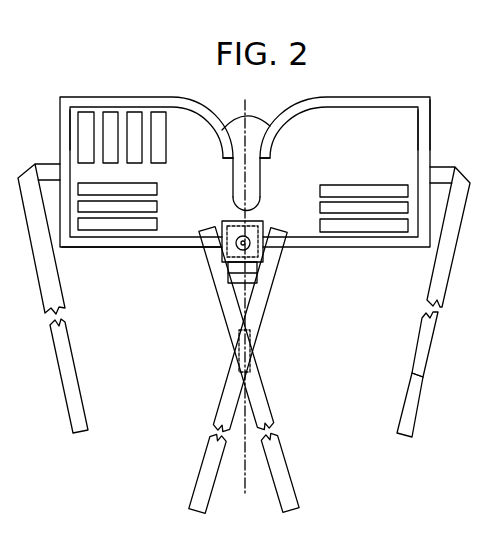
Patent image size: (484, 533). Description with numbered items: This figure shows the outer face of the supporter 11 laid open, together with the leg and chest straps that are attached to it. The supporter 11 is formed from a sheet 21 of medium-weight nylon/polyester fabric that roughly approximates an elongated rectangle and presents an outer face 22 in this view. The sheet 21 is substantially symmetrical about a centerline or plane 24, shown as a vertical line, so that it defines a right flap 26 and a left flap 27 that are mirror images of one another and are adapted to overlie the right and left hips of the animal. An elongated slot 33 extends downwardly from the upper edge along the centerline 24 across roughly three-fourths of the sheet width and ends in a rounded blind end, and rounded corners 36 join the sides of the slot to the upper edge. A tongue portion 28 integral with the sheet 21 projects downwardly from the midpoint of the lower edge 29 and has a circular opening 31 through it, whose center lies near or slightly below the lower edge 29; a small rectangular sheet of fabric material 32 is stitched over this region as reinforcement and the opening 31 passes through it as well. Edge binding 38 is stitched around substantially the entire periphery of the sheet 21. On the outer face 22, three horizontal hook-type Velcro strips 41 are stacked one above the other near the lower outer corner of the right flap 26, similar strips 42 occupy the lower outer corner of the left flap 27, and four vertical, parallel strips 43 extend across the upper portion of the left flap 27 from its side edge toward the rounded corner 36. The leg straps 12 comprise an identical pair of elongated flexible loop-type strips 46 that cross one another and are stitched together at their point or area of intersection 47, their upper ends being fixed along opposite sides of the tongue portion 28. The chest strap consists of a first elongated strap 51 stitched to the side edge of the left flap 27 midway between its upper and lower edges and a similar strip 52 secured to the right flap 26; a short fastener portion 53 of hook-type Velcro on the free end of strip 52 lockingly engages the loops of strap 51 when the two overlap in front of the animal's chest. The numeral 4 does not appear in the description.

The eyeglass frame 4 is at (143, 97).
The supporter 11 is at (382, 93).
The leg straps 12 is at (300, 478).
The sheet 21 is at (343, 122).
The outer face 22 is at (355, 159).
The centerline or plane 24 is at (245, 117).
The right flap 26 is at (405, 122).
The left flap 27 is at (75, 130).
The tongue portion 28 is at (252, 267).
The lower edge 29 is at (128, 247).
The circular opening 31 is at (237, 247).
The rectangular sheet of fabric material 32 is at (228, 232).
The elongated slot 33 is at (231, 195).
The rounded corners 36 is at (276, 124).
The edge binding 38 is at (428, 140).
The hook-type Velcro strips 41 is at (372, 226).
The hook-type Velcro strips 42 is at (103, 223).
The hook-type Velcro strips 43 is at (85, 145).
The elongated flexible strips 46 is at (222, 405).
The point or area of intersection 47 is at (242, 348).
The first elongated strap 51 is at (73, 385).
The strip 52 is at (420, 353).
The fastener portion 53 is at (405, 410).